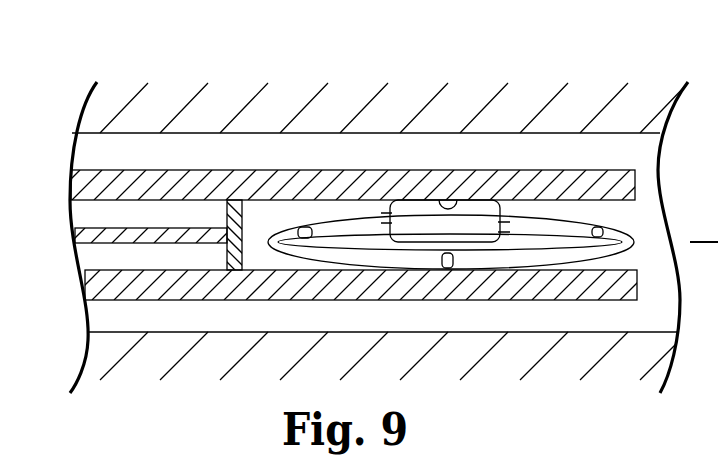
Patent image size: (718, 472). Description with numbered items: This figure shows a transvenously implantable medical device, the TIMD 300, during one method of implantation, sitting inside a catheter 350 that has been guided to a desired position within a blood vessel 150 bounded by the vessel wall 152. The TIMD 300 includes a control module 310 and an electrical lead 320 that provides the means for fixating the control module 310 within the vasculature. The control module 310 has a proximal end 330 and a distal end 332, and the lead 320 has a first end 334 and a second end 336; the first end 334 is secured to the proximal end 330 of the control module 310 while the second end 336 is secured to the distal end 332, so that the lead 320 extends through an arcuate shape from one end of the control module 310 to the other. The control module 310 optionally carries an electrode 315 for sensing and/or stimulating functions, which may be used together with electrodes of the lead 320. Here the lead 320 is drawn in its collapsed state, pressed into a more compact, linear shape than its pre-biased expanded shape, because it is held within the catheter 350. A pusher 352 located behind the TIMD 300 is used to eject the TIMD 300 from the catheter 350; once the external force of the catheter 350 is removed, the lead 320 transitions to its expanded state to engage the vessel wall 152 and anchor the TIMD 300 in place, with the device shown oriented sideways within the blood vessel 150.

The blood vessel 150 is at (210, 125).
The vessel wall 152 is at (162, 138).
The TIMD 300 is at (272, 270).
The control module 310 is at (414, 200).
The electrode 315 is at (448, 200).
The electrical lead 320 is at (321, 280).
The proximal end 330 is at (391, 223).
The distal end 332 is at (500, 232).
The first end 334 is at (390, 223).
The second end 336 is at (500, 222).
The catheter 350 is at (122, 310).
The pusher 352 is at (188, 208).